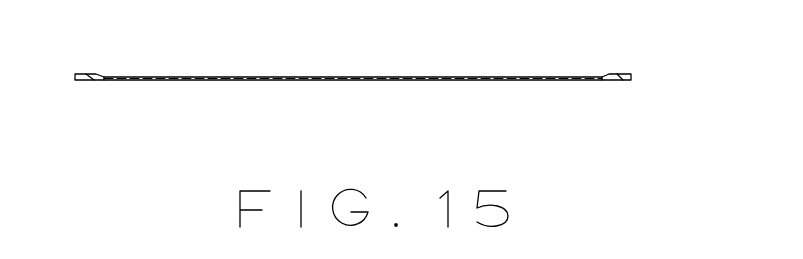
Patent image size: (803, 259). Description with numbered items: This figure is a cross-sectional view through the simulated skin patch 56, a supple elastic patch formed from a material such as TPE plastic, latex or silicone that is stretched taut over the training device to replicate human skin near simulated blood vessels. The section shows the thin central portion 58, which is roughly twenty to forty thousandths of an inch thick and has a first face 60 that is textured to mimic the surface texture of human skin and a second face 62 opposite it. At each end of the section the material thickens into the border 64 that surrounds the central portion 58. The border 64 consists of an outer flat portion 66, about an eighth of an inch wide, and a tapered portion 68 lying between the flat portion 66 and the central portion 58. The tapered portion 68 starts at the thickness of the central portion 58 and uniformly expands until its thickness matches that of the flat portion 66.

The simulated skin patch 56 is at (560, 100).
The central portion 58 is at (428, 77).
The first face 60 is at (267, 82).
The second face 62 is at (247, 97).
The border 64 is at (615, 82).
The flat portion 66 is at (83, 75).
The tapered portion 68 is at (97, 75).